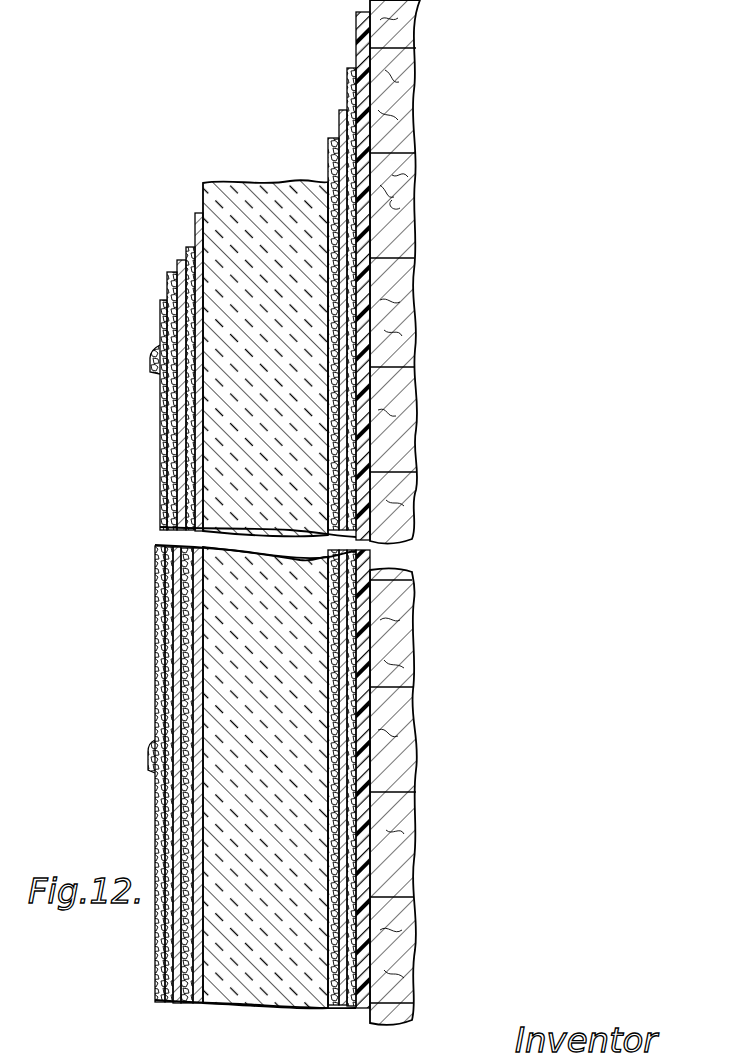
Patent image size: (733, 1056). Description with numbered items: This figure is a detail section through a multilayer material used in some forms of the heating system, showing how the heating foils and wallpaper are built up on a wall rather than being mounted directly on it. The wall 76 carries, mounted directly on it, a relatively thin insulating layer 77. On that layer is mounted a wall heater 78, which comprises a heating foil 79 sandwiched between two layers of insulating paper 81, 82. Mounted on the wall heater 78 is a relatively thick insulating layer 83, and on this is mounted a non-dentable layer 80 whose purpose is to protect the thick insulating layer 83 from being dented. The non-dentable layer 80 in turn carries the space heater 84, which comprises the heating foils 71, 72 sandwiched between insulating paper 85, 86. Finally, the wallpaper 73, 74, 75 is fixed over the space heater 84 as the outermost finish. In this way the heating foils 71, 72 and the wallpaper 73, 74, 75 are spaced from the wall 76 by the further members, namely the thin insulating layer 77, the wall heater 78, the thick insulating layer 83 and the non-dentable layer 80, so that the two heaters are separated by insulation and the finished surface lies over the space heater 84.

The heating foil 71 is at (170, 443).
The heating foil 72 is at (160, 742).
The wallpaper 73 is at (165, 343).
The wallpaper 74 is at (160, 495).
The wallpaper 75 is at (155, 838).
The wall 76 is at (415, 495).
The relatively thin insulating layer 77 is at (362, 71).
The wall heater 78 is at (366, 536).
The heating foil 79 is at (337, 171).
The non-dentable layer 80 is at (198, 214).
The insulating paper 81 is at (403, 178).
The insulating paper 82 is at (330, 248).
The relatively thick insulating layer 83 is at (233, 640).
The space heater 84 is at (155, 381).
The insulating paper 85 is at (165, 587).
The insulating paper 86 is at (165, 695).